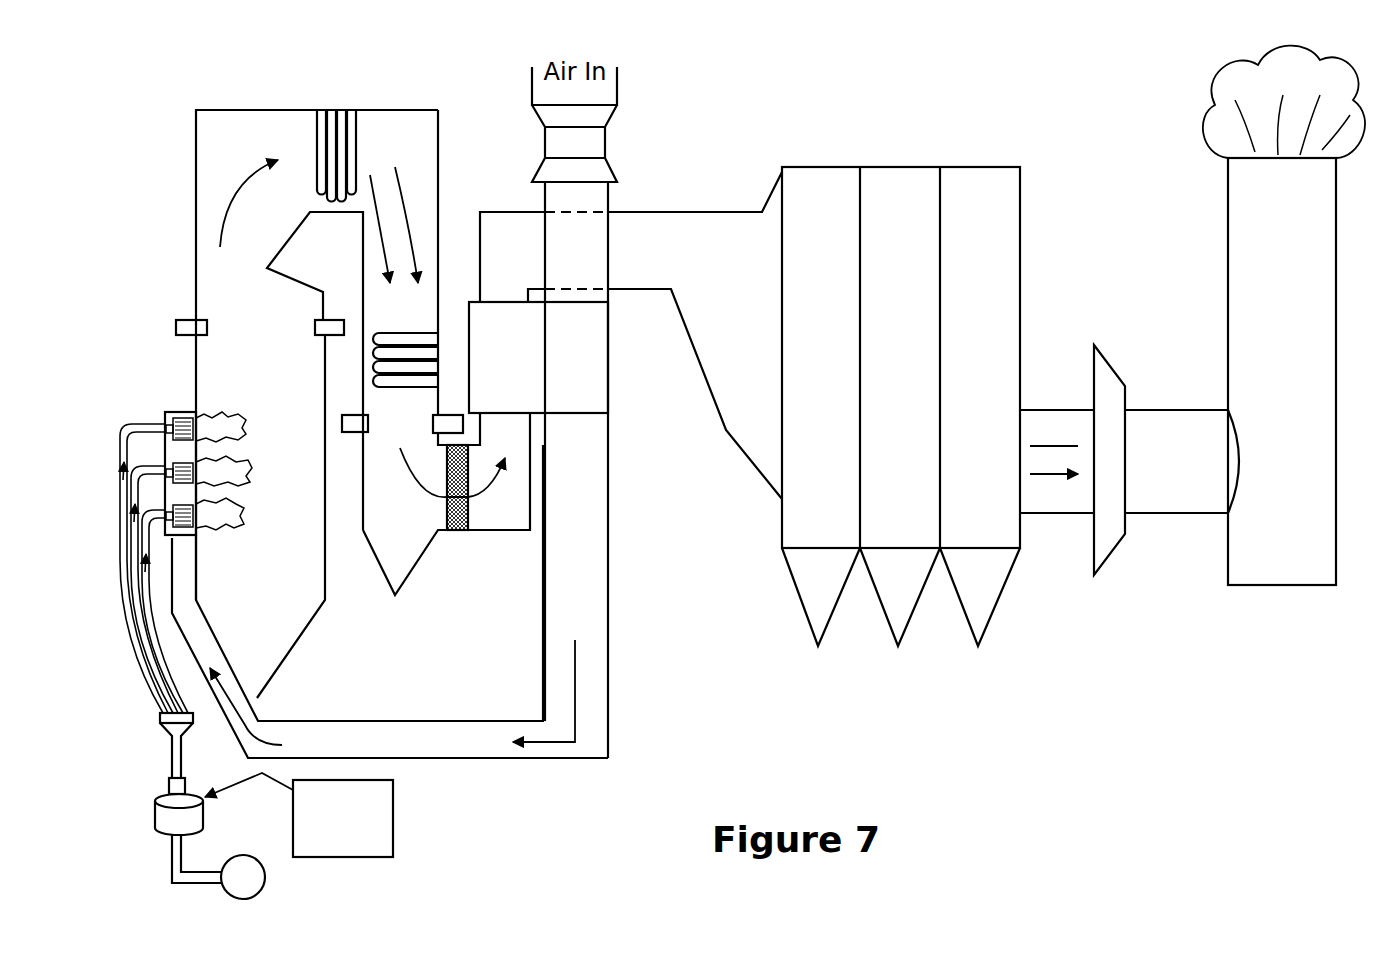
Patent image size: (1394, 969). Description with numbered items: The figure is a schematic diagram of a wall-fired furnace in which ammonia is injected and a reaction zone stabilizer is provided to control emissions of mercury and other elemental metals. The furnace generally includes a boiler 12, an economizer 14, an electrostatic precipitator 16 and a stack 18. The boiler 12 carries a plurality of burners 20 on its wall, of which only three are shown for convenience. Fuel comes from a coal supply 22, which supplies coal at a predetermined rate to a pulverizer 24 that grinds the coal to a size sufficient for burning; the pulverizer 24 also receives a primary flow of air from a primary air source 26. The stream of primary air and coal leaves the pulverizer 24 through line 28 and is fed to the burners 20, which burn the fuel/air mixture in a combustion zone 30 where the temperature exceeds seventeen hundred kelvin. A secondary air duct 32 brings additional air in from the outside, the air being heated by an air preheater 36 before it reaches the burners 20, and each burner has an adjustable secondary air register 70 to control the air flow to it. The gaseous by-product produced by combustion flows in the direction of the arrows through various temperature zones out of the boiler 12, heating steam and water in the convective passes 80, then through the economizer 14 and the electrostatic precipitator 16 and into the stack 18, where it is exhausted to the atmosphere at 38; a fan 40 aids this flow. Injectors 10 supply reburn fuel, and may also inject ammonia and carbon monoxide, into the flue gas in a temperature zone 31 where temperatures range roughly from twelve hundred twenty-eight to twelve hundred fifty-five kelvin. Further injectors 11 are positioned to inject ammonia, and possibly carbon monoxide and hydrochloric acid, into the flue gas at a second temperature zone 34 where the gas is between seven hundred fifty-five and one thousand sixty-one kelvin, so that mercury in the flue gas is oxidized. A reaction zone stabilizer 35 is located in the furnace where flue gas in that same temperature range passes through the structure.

The injectors 10 is at (188, 318).
The injectors 11 is at (352, 433).
The boiler 12 is at (196, 198).
The economizer 14 is at (438, 182).
The electrostatic precipitator 16 is at (1015, 272).
The stack 18 is at (1328, 375).
The burners 20 is at (175, 412).
The coal supply 22 is at (394, 798).
The pulverizer 24 is at (158, 826).
The primary air source 26 is at (265, 877).
The line 28 is at (172, 748).
The combustion zone 30 is at (267, 548).
The temperature zone 31 is at (234, 348).
The secondary air duct 32 is at (608, 758).
The second temperature zone 34 is at (381, 446).
The reaction zone stabilizer 35 is at (458, 532).
The air preheater 36 is at (597, 382).
The atmosphere exhaust 38 is at (1348, 127).
The fan 40 is at (1115, 560).
The adjustable secondary air register 70 is at (192, 537).
The convective passes 80 is at (335, 108).